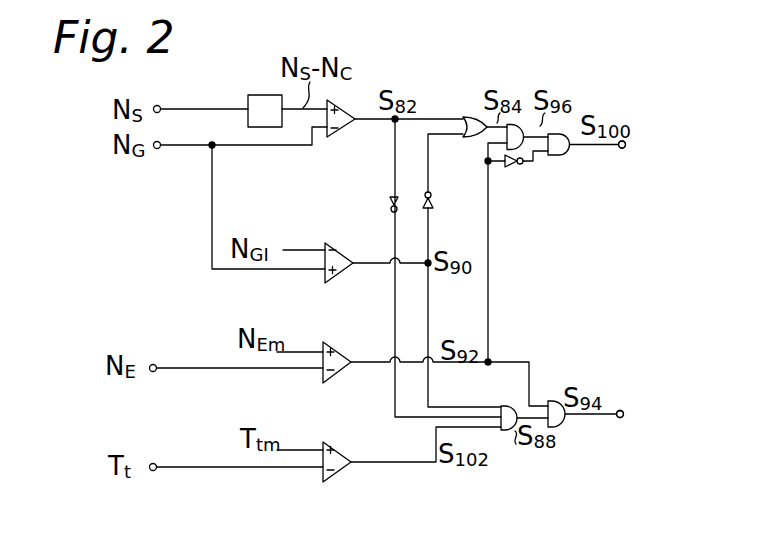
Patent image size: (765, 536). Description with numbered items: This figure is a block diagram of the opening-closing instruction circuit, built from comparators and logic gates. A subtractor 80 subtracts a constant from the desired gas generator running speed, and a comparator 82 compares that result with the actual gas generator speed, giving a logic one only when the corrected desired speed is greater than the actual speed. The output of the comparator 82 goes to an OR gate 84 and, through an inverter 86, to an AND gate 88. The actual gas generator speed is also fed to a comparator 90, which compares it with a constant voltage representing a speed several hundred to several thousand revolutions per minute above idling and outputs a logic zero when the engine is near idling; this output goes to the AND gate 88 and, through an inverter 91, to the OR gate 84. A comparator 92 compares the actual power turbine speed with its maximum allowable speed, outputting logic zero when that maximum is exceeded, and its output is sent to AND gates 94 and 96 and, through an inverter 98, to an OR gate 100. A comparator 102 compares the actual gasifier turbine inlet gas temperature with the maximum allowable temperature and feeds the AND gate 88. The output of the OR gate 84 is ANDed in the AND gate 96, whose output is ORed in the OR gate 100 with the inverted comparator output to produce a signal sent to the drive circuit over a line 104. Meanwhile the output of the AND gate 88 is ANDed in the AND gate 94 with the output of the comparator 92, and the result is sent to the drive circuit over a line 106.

The subtractor 80 is at (254, 94).
The comparator 82 is at (352, 107).
The OR gate 84 is at (470, 116).
The inverter 86 is at (389, 198).
The AND gate 88 is at (506, 434).
The comparator 90 is at (344, 252).
The inverter 91 is at (433, 205).
The comparator 92 is at (337, 349).
The AND gate 94 is at (563, 428).
The AND gate 96 is at (514, 124).
The inverter 98 is at (518, 166).
The OR gate 100 is at (566, 157).
The comparator 102 is at (340, 451).
The line 104 is at (624, 148).
The line 106 is at (622, 418).